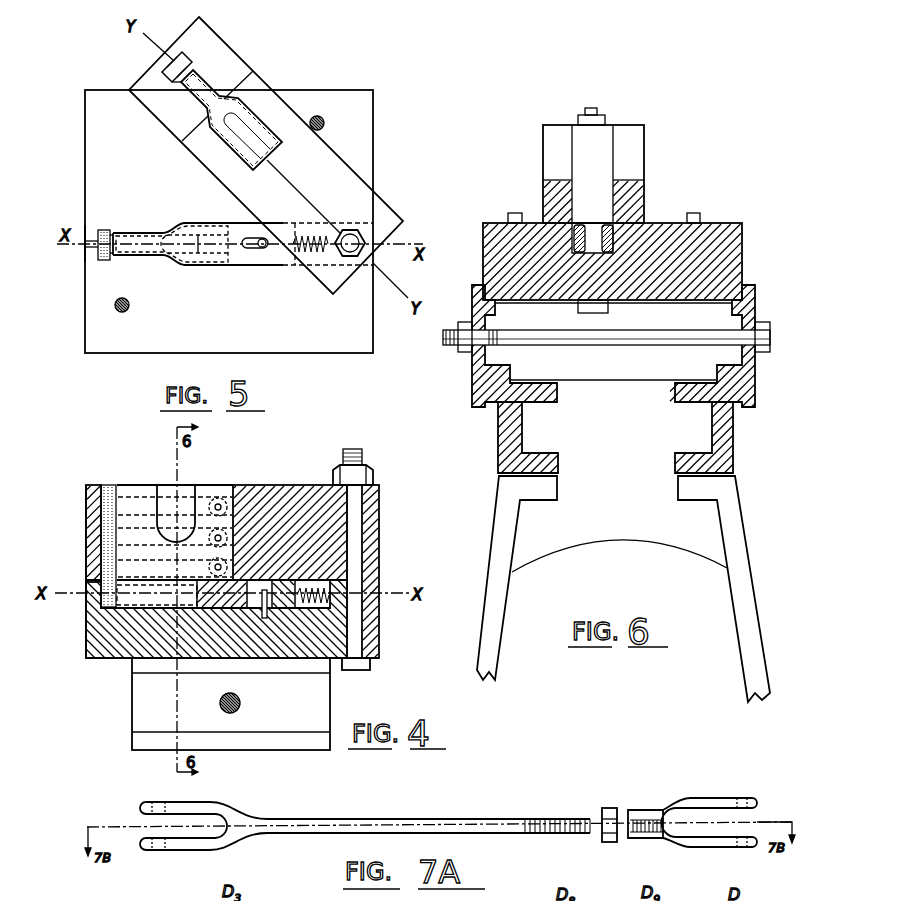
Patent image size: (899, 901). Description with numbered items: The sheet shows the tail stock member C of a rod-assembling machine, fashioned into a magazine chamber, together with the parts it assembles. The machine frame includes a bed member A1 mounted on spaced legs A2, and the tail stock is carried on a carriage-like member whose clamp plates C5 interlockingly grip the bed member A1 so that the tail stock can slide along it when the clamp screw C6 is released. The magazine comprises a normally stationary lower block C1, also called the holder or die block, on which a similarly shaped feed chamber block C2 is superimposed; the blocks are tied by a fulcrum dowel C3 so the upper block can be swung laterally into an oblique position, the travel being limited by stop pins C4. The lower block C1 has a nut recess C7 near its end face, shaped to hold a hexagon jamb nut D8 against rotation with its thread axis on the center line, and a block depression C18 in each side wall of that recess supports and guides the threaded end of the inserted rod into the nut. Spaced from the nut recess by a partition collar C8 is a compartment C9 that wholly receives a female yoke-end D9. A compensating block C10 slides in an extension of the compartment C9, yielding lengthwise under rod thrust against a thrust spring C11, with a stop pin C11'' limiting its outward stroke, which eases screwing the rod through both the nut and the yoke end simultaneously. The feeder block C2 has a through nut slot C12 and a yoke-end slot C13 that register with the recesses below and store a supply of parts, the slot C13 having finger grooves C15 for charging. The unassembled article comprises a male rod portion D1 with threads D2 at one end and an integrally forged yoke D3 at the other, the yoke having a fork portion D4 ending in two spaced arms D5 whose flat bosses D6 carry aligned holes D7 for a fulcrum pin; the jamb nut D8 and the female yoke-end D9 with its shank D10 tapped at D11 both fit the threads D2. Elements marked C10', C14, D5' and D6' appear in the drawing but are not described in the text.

In FIG. 5, the lower block C1 is at (92, 217).
In FIG. 6, the lower block C1 is at (727, 250).
In FIG. 4, the lower block C1 is at (90, 613).
In FIG. 5, the feed chamber block C2 is at (343, 180).
In FIG. 6, the feed chamber block C2 is at (637, 195).
In FIG. 4, the feed chamber block C2 is at (368, 530).
In FIG. 4, the fulcrum dowel C3 is at (363, 497).
In FIG. 5, the stop pins C4 is at (325, 125).
In FIG. 6, the clamp plates C5 is at (753, 305).
In FIG. 4, the clamp plates C5 is at (303, 733).
In FIG. 6, the clamp screw C6 is at (760, 340).
In FIG. 4, the clamp screw C6 is at (217, 705).
In FIG. 5, the nut recess C7 is at (97, 232).
In FIG. 4, the nut recess C7 is at (98, 588).
In FIG. 5, the partition collar C8 is at (95, 230).
In FIG. 4, the partition collar C8 is at (90, 640).
In FIG. 5, the yoke-end compartment C9 is at (137, 253).
In FIG. 4, the yoke-end compartment C9 is at (167, 602).
In FIG. 5, the compensating block C10 is at (290, 315).
In FIG. 4, the compensating block C10 is at (261, 681).
In FIG. 5, the slot wall C10' is at (139, 322).
In FIG. 5, the thrust spring C11 is at (347, 280).
In FIG. 4, the thrust spring C11 is at (358, 614).
In FIG. 4, the stop pin C11'' is at (170, 662).
In FIG. 5, the through nut slot C12 is at (165, 73).
In FIG. 4, the through nut slot C12 is at (103, 497).
In FIG. 5, the yoke-end slot C13 is at (210, 97).
In FIG. 4, the yoke-end slot C13 is at (217, 490).
In FIG. 5, the pin C14 is at (175, 72).
In FIG. 4, the pin C14 is at (110, 485).
In FIG. 5, the finger grooves C15 is at (253, 90).
In FIG. 4, the finger grooves C15 is at (160, 503).
In FIG. 5, the block depression C18 is at (87, 247).
In FIG. 4, the block depression C18 is at (110, 602).
In FIG. 4, the tail stock member C is at (373, 558).
In FIG. 6, the bed member A1 is at (727, 417).
In FIG. 6, the spaced legs A2 is at (732, 545).
In FIG. 7A, the male rod portion D1 is at (373, 823).
In FIG. 7A, the threads D2 is at (540, 815).
In FIG. 7A, the yoke D3 is at (190, 848).
In FIG. 7A, the fork portion D4 is at (227, 810).
In FIG. 5, the spaced arms D5 is at (172, 226).
In FIG. 7A, the spaced arms D5 is at (203, 814).
In FIG. 7A, the second fork D5' is at (692, 805).
In FIG. 7A, the flat bosses D6 is at (139, 799).
In FIG. 7A, the second fork prong tip D6' is at (766, 790).
In FIG. 7A, the aligned holes D7 is at (160, 853).
In FIG. 5, the hexagon jamb nut D8 is at (97, 257).
In FIG. 7A, the hexagon jamb nut D8 is at (607, 808).
In FIG. 5, the female yoke-end D9 is at (187, 260).
In FIG. 7A, the female yoke-end D9 is at (738, 847).
In FIG. 7A, the shank D10 is at (642, 818).
In FIG. 7A, the tapped portion D11 is at (645, 830).